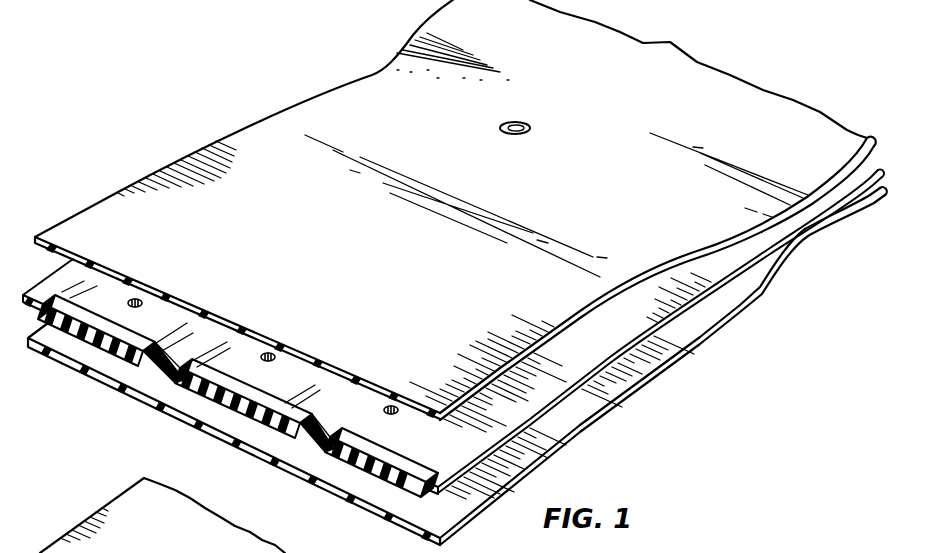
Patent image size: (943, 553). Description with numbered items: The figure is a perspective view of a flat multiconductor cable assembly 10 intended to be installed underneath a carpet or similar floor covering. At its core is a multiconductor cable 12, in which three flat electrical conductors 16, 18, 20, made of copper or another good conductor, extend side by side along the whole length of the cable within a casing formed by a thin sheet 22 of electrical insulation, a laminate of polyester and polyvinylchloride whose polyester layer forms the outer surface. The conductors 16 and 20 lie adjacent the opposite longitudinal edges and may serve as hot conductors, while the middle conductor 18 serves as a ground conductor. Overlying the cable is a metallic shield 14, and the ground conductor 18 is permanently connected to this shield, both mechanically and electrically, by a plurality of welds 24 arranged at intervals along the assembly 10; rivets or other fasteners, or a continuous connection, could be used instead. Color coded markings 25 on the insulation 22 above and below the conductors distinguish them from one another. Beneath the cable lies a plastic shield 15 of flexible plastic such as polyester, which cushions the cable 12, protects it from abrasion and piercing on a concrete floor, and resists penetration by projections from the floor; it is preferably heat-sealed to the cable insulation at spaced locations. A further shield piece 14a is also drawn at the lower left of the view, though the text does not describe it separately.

The flat multiconductor cable assembly 10 is at (455, 273).
The multiconductor cable 12 is at (627, 328).
The metallic shield 14 is at (379, 78).
The second cover sheet 14a is at (162, 515).
The plastic shield 15 is at (113, 368).
The flat electrical conductor 16 is at (92, 327).
The ground conductor 18 is at (220, 387).
The flat electrical conductor 20 is at (347, 447).
The thin sheet of electrical insulation 22 is at (421, 486).
The welds 24 is at (530, 128).
The color coded markings 25 is at (138, 299).